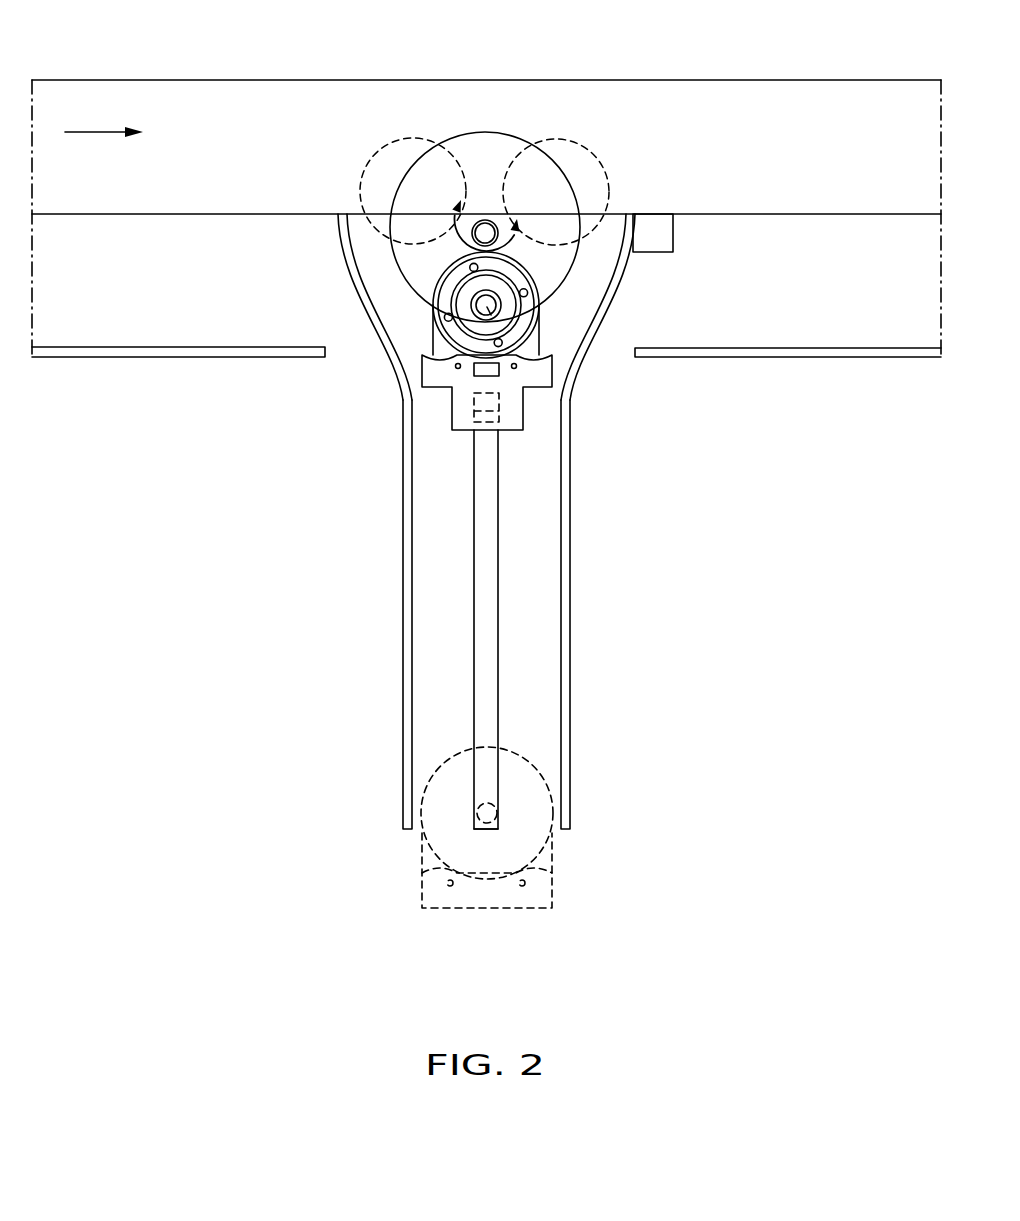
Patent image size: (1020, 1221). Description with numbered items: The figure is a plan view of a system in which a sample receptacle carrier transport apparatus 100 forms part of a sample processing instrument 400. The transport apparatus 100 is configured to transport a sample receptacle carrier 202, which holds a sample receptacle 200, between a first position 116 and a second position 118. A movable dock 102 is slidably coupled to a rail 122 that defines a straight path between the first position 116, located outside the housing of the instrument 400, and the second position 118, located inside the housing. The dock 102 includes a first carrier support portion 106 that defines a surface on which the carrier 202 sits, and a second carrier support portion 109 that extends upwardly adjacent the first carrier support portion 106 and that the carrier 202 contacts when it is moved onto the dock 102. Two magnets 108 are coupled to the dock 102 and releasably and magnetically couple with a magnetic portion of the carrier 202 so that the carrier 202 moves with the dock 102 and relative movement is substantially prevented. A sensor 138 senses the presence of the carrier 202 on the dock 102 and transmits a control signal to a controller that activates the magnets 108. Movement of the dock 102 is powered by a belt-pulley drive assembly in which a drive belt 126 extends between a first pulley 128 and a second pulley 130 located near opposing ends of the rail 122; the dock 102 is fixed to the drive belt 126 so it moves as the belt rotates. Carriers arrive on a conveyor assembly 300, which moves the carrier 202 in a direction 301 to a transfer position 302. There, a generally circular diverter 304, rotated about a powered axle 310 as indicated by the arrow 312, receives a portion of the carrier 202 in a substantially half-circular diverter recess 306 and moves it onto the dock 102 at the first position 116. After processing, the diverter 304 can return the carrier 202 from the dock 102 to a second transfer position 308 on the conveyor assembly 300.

The sample receptacle carrier transport apparatus 100 is at (760, 546).
The movable dock 102 is at (462, 418).
The first carrier support portion 106 is at (503, 283).
The magnets 108 is at (457, 368).
The second carrier support portion 109 is at (510, 377).
The first position 116 is at (413, 338).
The second position 118 is at (380, 797).
The rail 122 is at (488, 592).
The drive belt 126 is at (522, 642).
The first pulley 128 is at (491, 315).
The second pulley 130 is at (480, 807).
The sensor 138 is at (478, 376).
The sample receptacle 200 is at (497, 310).
The sample receptacle carrier 202 is at (535, 282).
The conveyor assembly 300 is at (657, 233).
The direction 301 is at (105, 130).
The transfer position 302 is at (385, 147).
The diverter 304 is at (503, 145).
The diverter recess 306 is at (432, 262).
The second transfer position 308 is at (606, 155).
The powered axle 310 is at (485, 219).
The arrow 312 is at (512, 252).
The sample processing instrument 400 is at (237, 103).